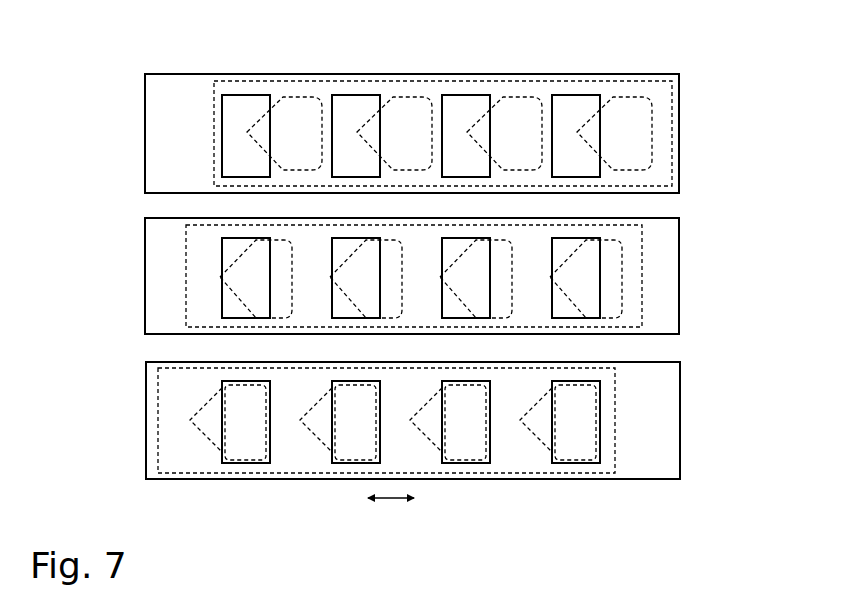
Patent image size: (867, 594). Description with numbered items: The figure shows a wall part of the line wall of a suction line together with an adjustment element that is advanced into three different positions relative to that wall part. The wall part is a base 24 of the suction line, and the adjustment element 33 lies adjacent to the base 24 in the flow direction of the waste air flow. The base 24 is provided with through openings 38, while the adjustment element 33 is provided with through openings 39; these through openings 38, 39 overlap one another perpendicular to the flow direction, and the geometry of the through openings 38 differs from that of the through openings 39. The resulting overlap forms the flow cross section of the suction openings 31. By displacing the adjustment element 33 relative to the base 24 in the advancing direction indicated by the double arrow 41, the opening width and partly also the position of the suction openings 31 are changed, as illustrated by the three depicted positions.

The base 24 is at (680, 117).
The suction openings 31 is at (259, 132).
The adjustment element 33 is at (673, 161).
The through openings 38 is at (577, 125).
The through openings 39 is at (638, 140).
The double arrow 41 is at (392, 503).